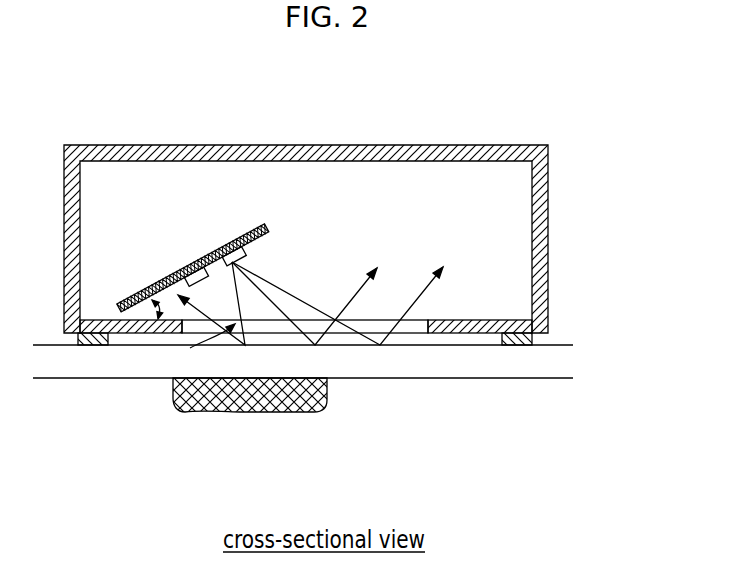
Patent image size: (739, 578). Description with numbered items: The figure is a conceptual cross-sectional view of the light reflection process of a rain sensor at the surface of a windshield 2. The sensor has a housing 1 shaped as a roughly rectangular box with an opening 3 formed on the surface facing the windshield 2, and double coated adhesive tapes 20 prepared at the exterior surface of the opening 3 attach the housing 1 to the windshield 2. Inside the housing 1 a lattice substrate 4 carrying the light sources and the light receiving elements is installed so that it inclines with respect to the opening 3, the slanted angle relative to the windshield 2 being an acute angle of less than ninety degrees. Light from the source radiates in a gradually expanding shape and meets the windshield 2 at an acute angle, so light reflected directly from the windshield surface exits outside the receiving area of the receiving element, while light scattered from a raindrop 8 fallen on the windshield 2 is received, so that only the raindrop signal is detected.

The housing 1 is at (327, 147).
The windshield 2 is at (505, 368).
The opening 3 is at (343, 332).
The lattice substrate 4 is at (190, 272).
The raindrop 8 is at (247, 412).
The double coated adhesive tape 20 is at (532, 344).